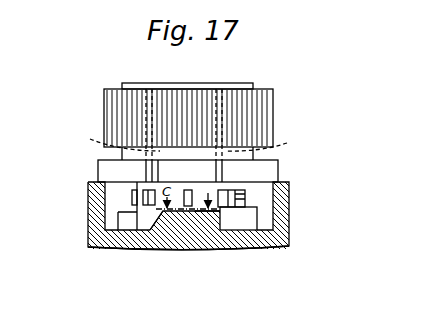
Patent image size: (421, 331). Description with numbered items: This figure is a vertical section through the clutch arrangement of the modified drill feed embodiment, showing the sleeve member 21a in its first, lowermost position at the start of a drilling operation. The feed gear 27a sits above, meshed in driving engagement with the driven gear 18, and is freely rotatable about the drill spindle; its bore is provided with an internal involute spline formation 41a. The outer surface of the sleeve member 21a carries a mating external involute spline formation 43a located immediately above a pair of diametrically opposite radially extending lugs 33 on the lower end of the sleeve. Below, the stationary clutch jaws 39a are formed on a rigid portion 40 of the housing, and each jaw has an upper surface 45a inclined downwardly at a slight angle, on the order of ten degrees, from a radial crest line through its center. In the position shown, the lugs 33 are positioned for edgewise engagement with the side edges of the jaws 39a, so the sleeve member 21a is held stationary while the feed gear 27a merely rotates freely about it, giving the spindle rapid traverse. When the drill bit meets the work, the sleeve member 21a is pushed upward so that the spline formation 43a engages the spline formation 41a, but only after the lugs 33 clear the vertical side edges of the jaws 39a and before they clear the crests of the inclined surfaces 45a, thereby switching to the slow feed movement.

The feed gear 27a is at (263, 113).
The internal involute spline formation 41a is at (187, 136).
The sleeve member 21a is at (235, 181).
The driven gear 18 is at (88, 182).
The external involute spline formation 43a is at (75, 219).
The rigid portion of the housing 40 is at (282, 218).
The stationary clutch jaws 39a is at (186, 222).
The inclined upper surfaces 45a is at (200, 212).
The radially extending lugs 33 is at (258, 238).